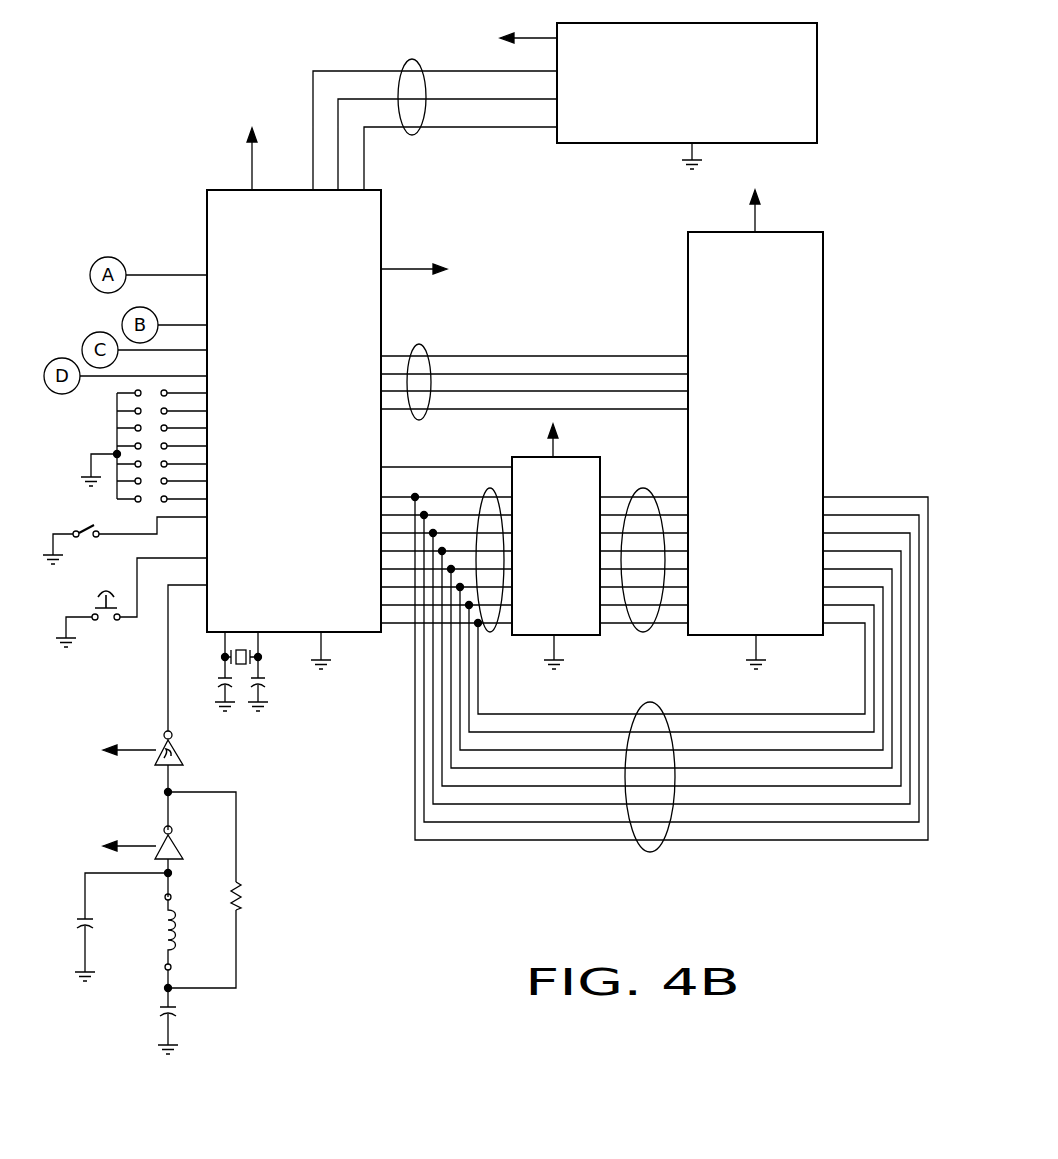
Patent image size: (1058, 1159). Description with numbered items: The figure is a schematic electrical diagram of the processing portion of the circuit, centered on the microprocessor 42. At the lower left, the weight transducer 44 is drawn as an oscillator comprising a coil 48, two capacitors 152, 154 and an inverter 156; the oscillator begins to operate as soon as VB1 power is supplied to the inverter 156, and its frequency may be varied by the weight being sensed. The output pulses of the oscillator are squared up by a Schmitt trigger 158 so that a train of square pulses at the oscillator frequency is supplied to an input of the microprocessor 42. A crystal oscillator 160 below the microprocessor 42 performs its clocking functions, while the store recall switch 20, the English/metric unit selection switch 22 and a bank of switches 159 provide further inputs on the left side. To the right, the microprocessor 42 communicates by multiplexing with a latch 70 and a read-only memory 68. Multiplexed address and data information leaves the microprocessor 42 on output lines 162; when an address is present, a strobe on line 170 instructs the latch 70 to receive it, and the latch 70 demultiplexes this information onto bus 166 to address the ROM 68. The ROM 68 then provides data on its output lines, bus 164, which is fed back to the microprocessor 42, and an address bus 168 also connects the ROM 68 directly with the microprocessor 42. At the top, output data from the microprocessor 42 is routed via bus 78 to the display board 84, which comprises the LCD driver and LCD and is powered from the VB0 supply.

The bus 78 is at (405, 68).
The display board 84 is at (817, 88).
The microprocessor 42 is at (283, 248).
The read-only memory (ROM) 68 is at (743, 313).
The address bus 168 is at (427, 350).
The multiplexed data bus 170 is at (412, 466).
The latch 70 is at (600, 468).
The switch bank 159 is at (117, 432).
The English/metric unit selection switch 22 is at (90, 527).
The store recall switch 20 is at (106, 620).
The crystal oscillator 160 is at (275, 688).
The Schmitt trigger 158 is at (183, 752).
The inverter 156 is at (180, 840).
The capacitor 152 is at (95, 916).
The coil 48 is at (176, 930).
The weight transducer 44 is at (253, 903).
The capacitor 154 is at (183, 1005).
The output lines 162 is at (493, 631).
The bus 166 is at (648, 632).
The bus 164 is at (633, 841).